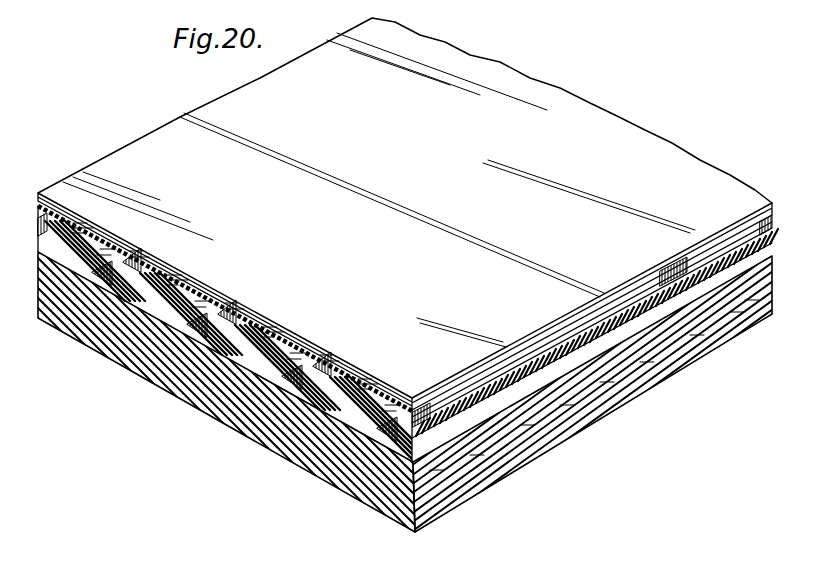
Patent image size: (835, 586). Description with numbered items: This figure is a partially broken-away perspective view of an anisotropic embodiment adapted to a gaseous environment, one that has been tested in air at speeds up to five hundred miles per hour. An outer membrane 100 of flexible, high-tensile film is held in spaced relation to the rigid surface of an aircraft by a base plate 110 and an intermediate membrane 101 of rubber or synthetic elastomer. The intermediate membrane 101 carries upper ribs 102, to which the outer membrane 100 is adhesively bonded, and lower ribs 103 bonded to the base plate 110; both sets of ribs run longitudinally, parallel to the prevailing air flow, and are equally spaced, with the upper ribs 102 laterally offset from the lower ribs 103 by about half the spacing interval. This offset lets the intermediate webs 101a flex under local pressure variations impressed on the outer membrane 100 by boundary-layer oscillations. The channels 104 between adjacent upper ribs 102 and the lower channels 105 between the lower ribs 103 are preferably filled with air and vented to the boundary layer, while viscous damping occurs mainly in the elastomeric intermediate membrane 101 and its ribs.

The outer membrane 100 is at (153, 147).
The intermediate membrane 101 is at (551, 346).
The intermediate webs 101a is at (228, 330).
The upper ribs 102 is at (203, 288).
The lower ribs 103 is at (80, 252).
The channels 104 is at (167, 290).
The lower channels 105 is at (243, 363).
The base plate 110 is at (203, 407).